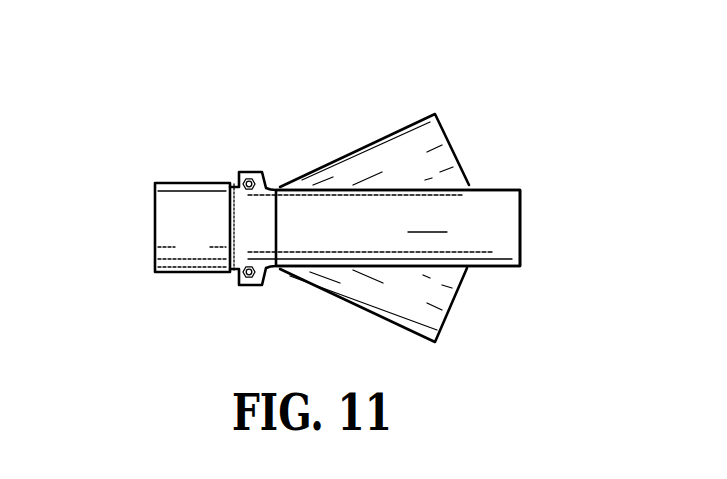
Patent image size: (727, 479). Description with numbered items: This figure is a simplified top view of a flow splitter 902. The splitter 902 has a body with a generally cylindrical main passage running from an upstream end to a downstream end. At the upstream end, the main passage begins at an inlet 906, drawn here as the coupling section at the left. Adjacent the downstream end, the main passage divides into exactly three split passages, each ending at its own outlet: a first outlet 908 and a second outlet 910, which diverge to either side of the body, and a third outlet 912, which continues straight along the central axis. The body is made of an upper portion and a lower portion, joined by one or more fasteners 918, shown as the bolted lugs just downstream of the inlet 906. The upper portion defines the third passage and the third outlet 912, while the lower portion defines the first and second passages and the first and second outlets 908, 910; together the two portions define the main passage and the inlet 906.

The flow splitter 902 is at (162, 119).
The inlet 906 is at (155, 240).
The first outlet 908 is at (440, 335).
The second outlet 910 is at (433, 137).
The third outlet 912 is at (503, 232).
The fastener 918 is at (267, 175).